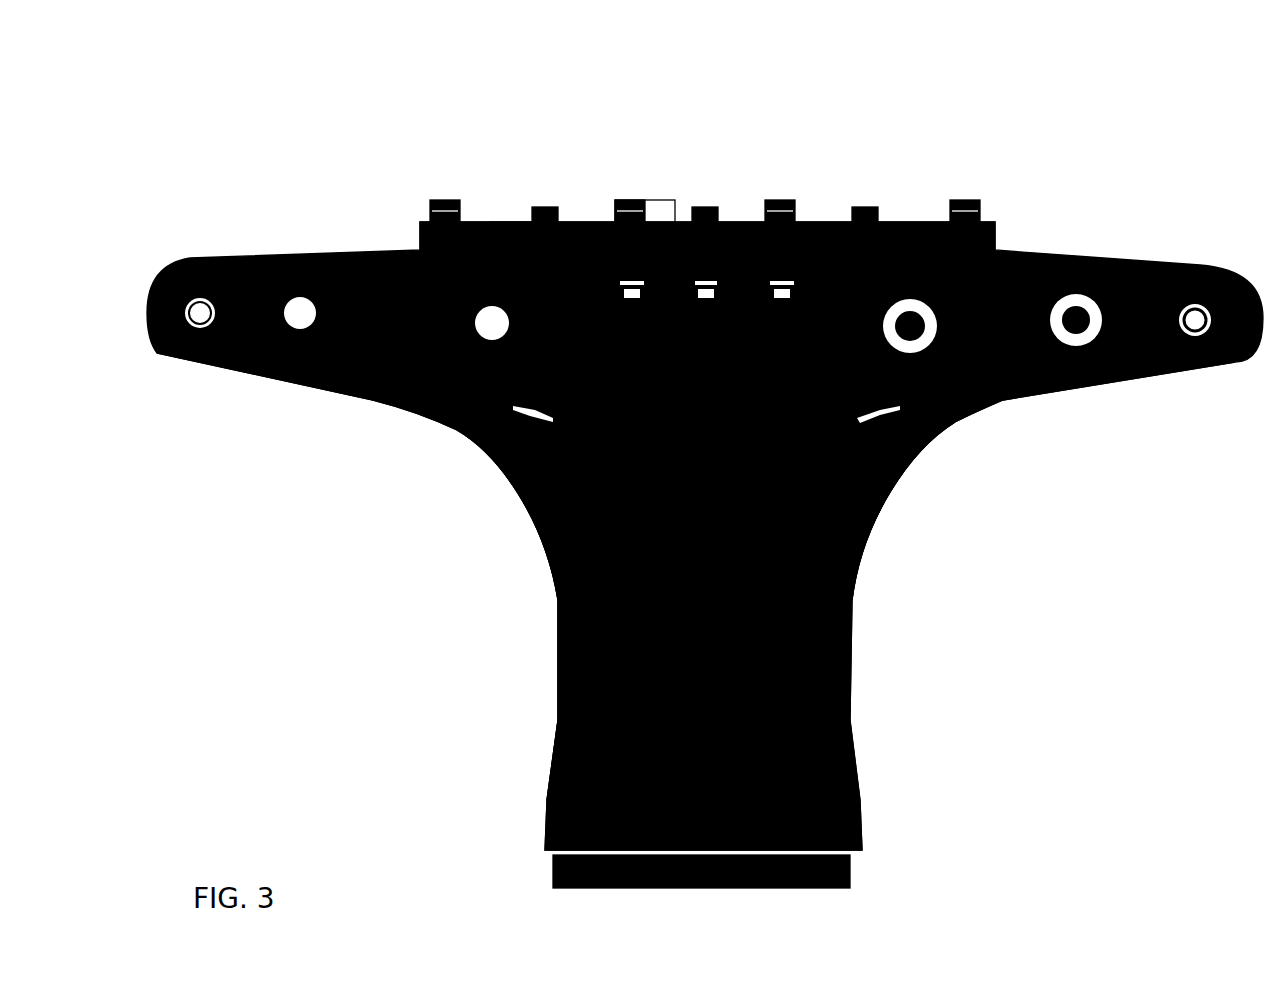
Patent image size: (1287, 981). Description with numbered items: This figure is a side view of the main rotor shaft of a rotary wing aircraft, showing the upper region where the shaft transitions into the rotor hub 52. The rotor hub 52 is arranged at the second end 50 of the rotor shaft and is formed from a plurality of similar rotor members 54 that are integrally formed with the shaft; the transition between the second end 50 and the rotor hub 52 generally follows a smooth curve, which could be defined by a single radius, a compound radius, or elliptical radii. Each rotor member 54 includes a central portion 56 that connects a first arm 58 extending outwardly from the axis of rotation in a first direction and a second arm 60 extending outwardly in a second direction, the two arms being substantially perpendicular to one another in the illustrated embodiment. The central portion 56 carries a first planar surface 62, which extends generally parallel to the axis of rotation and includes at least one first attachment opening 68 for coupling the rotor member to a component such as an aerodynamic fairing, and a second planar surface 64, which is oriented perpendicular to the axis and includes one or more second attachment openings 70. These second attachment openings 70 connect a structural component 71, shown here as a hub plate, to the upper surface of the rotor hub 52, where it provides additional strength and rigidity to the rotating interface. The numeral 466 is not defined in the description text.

The rotor hub 52 is at (226, 125).
The rotor member 54 is at (826, 222).
The second planar surface 64 is at (660, 225).
The structural component 71 is at (510, 221).
The second attachment opening 70 is at (415, 242).
The first arm 58 is at (400, 405).
The central portion 56 is at (508, 480).
The first attachment opening 68 is at (552, 563).
The first planar surface 62 is at (910, 472).
The second arm 60 is at (1003, 400).
The second end 50 is at (857, 580).
The base ring 466 is at (856, 878).